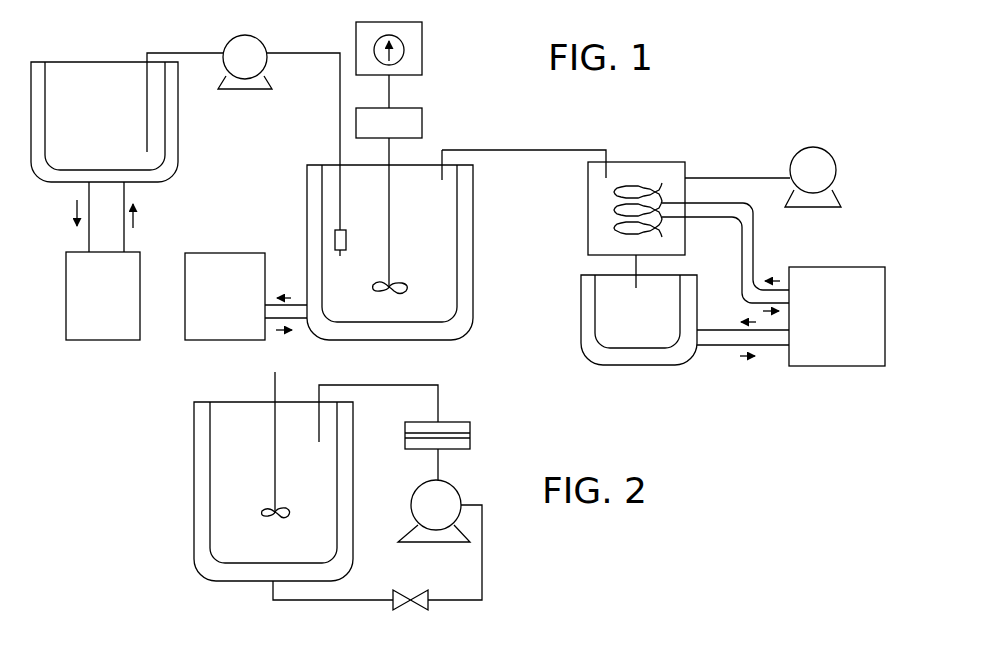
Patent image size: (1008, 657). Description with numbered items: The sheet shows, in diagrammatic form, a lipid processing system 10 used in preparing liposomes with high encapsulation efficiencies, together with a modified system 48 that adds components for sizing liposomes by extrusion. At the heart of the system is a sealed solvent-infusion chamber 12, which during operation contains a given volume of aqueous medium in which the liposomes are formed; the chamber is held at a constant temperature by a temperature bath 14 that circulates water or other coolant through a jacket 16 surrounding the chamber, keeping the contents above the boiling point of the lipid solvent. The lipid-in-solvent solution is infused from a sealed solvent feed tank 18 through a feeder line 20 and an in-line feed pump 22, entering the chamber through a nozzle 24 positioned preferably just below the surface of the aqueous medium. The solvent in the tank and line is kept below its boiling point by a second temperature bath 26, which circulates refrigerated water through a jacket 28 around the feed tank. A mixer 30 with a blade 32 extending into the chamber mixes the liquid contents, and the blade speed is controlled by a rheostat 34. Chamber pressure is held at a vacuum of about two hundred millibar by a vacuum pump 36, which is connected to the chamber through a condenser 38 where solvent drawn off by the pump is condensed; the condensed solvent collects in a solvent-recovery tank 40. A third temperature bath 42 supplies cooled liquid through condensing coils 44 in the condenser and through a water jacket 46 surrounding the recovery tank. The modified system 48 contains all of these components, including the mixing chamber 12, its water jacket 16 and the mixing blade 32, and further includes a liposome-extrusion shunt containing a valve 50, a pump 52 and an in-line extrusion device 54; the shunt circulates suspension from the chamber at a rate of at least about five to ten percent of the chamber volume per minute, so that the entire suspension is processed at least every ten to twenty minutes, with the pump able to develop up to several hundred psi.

In FIG. 1, the processing system 10 is at (506, 127).
In FIG. 1, the solvent-infusion chamber 12 is at (463, 290).
In FIG. 2, the solvent-infusion chamber 12 is at (217, 424).
In FIG. 1, the temperature bath 14 is at (222, 342).
In FIG. 1, the jacket 16 is at (473, 308).
In FIG. 2, the jacket 16 is at (228, 572).
In FIG. 1, the solvent feed tank 18 is at (51, 76).
In FIG. 1, the feeder line 20 is at (305, 57).
In FIG. 1, the feed pump 22 is at (250, 38).
In FIG. 1, the nozzle 24 is at (346, 236).
In FIG. 1, the temperature bath 26 is at (106, 342).
In FIG. 1, the jacket 28 is at (178, 152).
In FIG. 1, the mixer 30 is at (422, 122).
In FIG. 1, the blade 32 is at (410, 290).
In FIG. 2, the blade 32 is at (283, 517).
In FIG. 1, the rheostat 34 is at (412, 28).
In FIG. 1, the vacuum pump 36 is at (795, 150).
In FIG. 1, the condenser 38 is at (653, 162).
In FIG. 1, the solvent-recovery tank 40 is at (604, 336).
In FIG. 1, the temperature bath 42 is at (840, 358).
In FIG. 1, the condensing coils 44 is at (614, 207).
In FIG. 1, the water jacket 46 is at (594, 352).
In FIG. 2, the modified system 48 is at (399, 384).
In FIG. 2, the valve 50 is at (422, 606).
In FIG. 2, the pump 52 is at (458, 485).
In FIG. 2, the extrusion device 54 is at (458, 422).